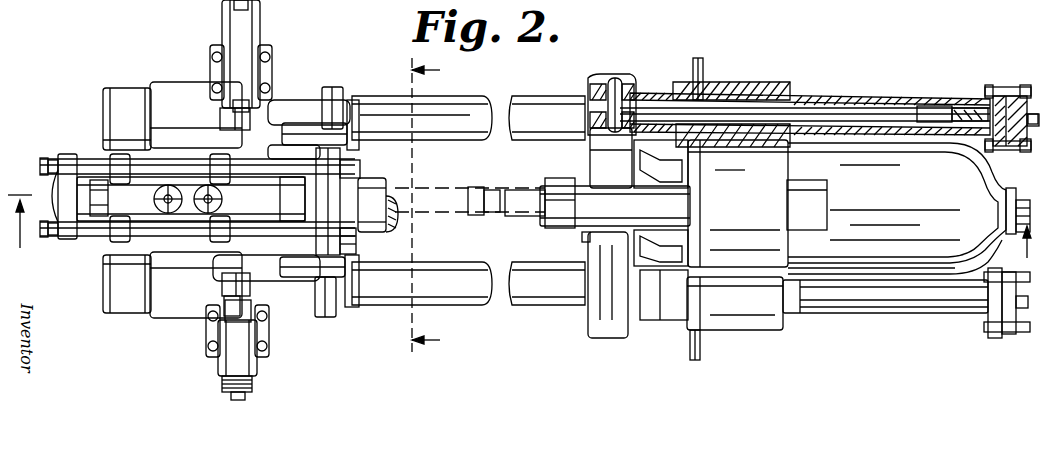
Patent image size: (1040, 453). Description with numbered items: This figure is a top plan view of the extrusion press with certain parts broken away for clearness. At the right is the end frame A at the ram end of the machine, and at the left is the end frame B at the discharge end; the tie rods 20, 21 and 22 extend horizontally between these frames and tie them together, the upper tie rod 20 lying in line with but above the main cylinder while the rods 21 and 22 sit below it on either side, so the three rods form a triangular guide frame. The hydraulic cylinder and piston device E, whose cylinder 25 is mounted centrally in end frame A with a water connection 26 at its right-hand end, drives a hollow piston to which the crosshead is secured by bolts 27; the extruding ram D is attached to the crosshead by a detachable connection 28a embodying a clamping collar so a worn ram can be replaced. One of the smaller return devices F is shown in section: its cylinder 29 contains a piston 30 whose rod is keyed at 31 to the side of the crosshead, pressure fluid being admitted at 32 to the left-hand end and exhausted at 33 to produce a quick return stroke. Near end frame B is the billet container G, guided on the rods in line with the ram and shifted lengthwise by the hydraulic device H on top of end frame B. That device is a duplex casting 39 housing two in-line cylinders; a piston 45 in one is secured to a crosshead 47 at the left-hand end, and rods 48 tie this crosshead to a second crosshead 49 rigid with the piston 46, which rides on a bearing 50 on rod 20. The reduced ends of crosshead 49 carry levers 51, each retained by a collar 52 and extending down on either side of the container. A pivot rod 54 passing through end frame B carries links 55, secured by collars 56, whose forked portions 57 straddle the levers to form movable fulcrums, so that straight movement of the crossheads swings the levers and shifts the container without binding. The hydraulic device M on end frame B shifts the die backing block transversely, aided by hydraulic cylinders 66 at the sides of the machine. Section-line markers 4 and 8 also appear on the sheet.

The hydraulic cylinders 66 is at (226, 33).
The pivot rod 54 is at (226, 78).
The links 55 is at (232, 118).
The collars 56 is at (178, 312).
The rods 48 is at (96, 160).
The crosshead 47 is at (58, 192).
The cylindrical piston 45 is at (82, 218).
The casting 39 is at (191, 199).
The forked portions 57 is at (298, 122).
The collar 52 is at (326, 118).
The levers 51 is at (328, 136).
The piston 46 is at (308, 192).
The bearing 50 is at (400, 216).
The crosshead 49 is at (358, 240).
The section line 4 is at (519, 233).
The section line 8 is at (433, 206).
The upper tie rod 20 is at (390, 188).
The tie rod 21 is at (520, 110).
The tie rod 22 is at (522, 306).
The detachable connection 28a is at (558, 178).
The bolts 27 is at (582, 238).
The key 31 is at (618, 82).
The pressure fluid inlet 32 is at (703, 76).
The cylinder 29 is at (846, 104).
The piston 30 is at (934, 106).
The exhaust 33 is at (1034, 112).
The cylinder 25 is at (877, 193).
The water connection 26 is at (1022, 200).
The hydraulic cylinder and piston device M is at (250, 200).
The end frame B is at (172, 200).
The hydraulic device H is at (203, 199).
The billet container G is at (486, 233).
The extruding ram D is at (506, 194).
The hydraulic cylinder and piston devices F is at (813, 207).
The end frame A is at (711, 235).
The hydraulic cylinder and piston device E is at (908, 208).